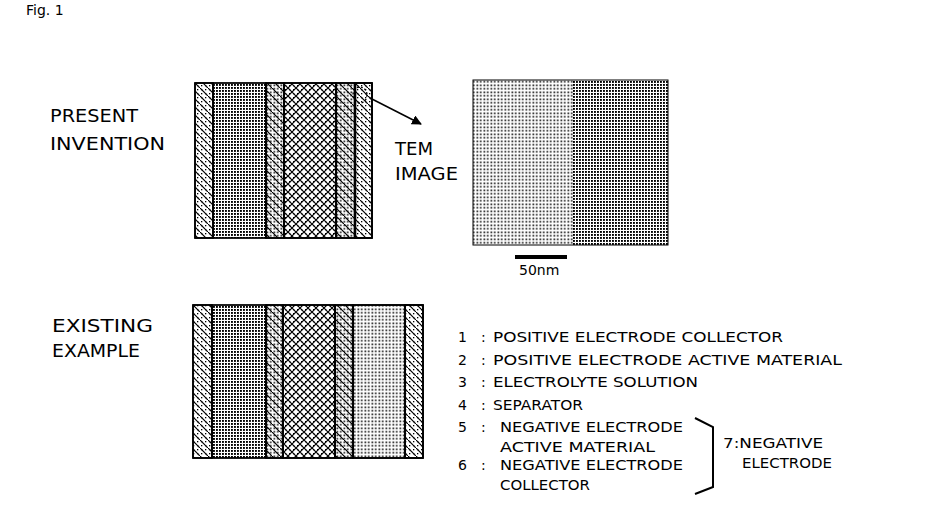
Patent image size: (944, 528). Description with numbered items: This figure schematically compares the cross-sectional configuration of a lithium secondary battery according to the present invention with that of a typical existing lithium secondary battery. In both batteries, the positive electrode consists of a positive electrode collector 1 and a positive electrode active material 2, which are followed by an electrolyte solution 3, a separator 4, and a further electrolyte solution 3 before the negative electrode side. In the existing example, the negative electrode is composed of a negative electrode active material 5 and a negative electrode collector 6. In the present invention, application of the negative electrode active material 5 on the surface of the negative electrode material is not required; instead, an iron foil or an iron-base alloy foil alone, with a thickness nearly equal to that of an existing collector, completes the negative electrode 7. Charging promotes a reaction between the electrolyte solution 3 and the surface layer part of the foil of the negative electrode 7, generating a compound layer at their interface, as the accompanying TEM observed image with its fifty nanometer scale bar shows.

The positive electrode collector 1 is at (205, 231).
The positive electrode active material 2 is at (240, 231).
The electrolyte solution 3 is at (275, 231).
The separator 4 is at (310, 231).
The negative electrode active material 5 is at (379, 451).
The negative electrode collector 6 is at (414, 451).
The negative electrode 7 is at (363, 231).